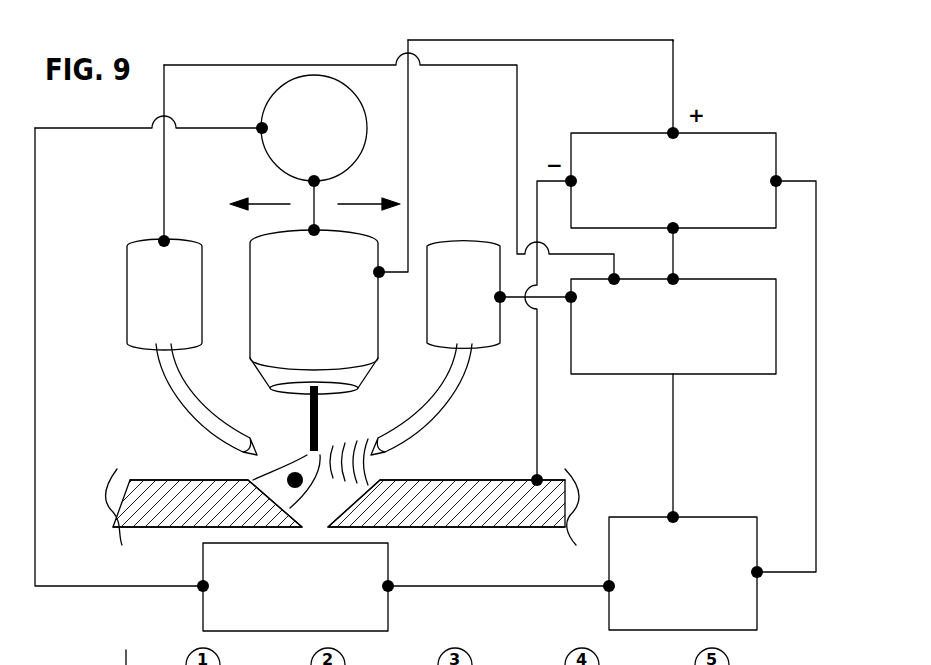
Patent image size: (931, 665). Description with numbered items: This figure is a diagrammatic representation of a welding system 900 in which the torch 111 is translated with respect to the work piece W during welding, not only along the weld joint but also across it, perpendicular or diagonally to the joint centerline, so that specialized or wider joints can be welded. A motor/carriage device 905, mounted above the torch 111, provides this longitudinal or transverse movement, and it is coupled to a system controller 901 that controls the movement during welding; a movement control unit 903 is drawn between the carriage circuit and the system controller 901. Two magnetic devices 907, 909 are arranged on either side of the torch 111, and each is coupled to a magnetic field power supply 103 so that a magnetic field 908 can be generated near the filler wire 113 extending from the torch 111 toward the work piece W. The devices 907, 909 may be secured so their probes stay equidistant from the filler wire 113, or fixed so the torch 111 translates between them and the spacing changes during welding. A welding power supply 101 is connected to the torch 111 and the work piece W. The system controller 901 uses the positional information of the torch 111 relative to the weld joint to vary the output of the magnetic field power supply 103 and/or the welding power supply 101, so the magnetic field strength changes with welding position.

The welding system 900 is at (694, 54).
The system controller 901 is at (708, 517).
The movement control unit 903 is at (390, 601).
The motor/carriage device 905 is at (268, 108).
The magnetic device 907 is at (447, 246).
The magnetic field 908 is at (373, 470).
The magnetic device 909 is at (130, 281).
The welding power supply 101 is at (744, 133).
The magnetic field power supply 103 is at (723, 279).
The torch 111 is at (350, 312).
The filler wire 113 is at (320, 428).
The work piece W is at (180, 528).